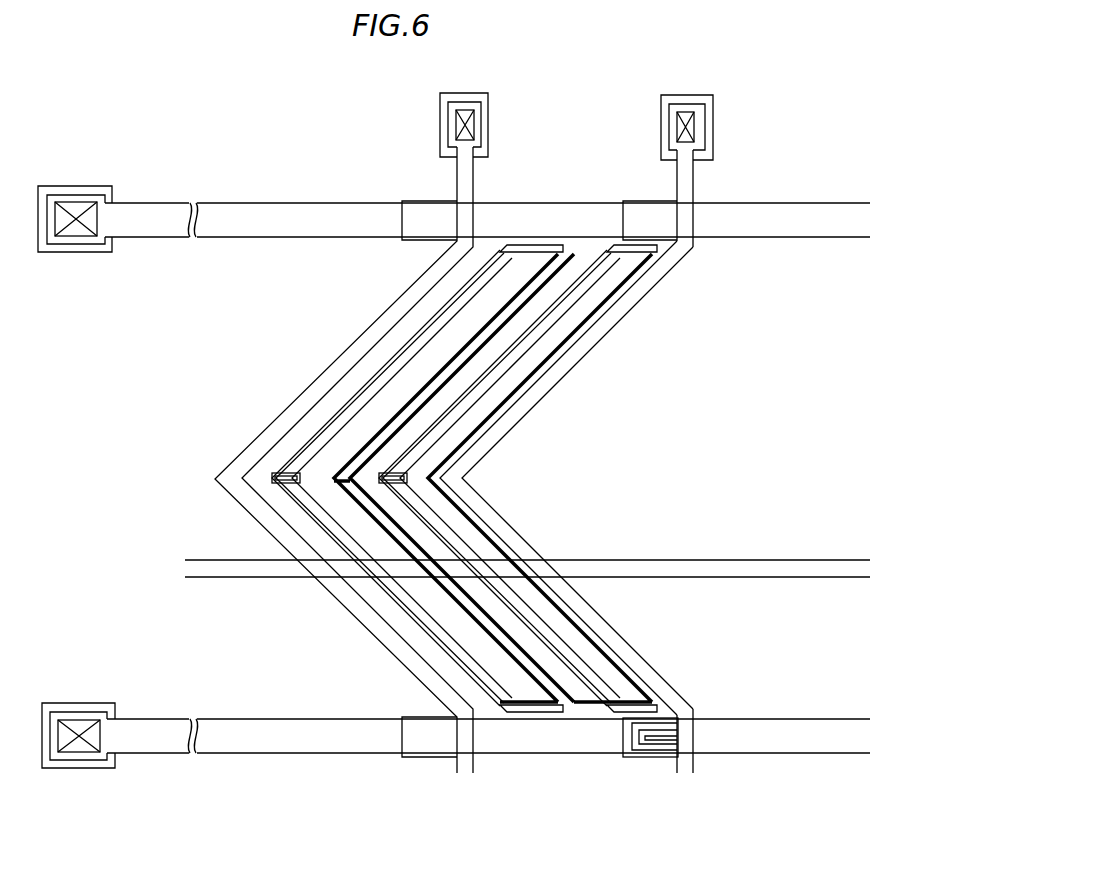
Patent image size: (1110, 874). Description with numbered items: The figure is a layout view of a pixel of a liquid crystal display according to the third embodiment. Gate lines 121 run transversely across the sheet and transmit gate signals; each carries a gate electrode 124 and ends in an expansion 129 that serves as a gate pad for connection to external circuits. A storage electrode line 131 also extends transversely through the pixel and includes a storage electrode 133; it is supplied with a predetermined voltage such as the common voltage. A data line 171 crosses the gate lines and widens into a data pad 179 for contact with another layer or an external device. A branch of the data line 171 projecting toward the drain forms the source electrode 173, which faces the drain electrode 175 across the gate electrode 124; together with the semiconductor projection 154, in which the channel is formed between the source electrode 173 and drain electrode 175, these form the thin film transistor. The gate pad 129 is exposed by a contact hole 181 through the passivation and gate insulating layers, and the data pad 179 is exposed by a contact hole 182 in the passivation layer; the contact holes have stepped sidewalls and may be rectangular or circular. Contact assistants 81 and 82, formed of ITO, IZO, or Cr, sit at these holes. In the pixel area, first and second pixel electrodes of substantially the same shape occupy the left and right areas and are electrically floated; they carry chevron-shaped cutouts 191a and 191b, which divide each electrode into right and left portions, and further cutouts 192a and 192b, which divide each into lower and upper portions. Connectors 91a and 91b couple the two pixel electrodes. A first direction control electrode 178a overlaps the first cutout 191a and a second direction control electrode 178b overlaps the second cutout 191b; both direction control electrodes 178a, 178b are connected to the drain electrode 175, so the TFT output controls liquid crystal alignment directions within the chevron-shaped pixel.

The gate line 121 is at (395, 757).
The gate electrode 124 is at (631, 758).
The expansion 129 is at (106, 704).
The storage electrode line 131 is at (776, 580).
The storage electrode 133 is at (485, 555).
The projection 154 is at (625, 740).
The data line 171 is at (533, 556).
The source electrode 173 is at (668, 730).
The drain electrode 175 is at (656, 722).
The first direction control electrode 178a is at (432, 322).
The second direction control electrode 178b is at (598, 303).
The data pad 179 is at (669, 128).
The contact hole 181 is at (90, 758).
The contact hole 182 is at (698, 118).
The first cutout 191a is at (320, 397).
The second cutout 191b is at (508, 398).
The cutout 192a is at (300, 488).
The cutout 192b is at (436, 479).
The contact assistant 81 is at (78, 704).
The contact assistant 82 is at (710, 150).
The connector 91a is at (413, 338).
The connector 91b is at (586, 318).